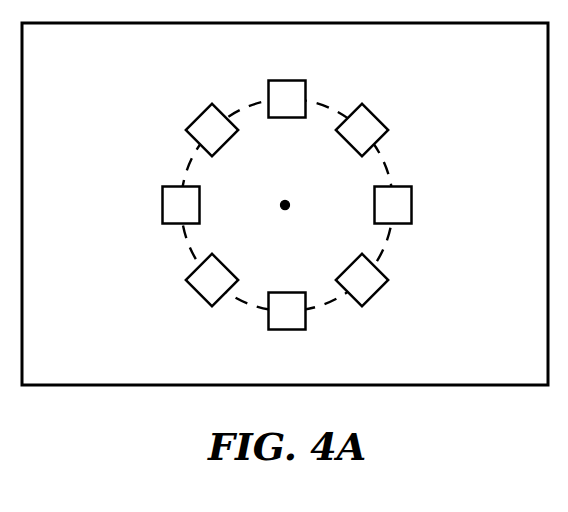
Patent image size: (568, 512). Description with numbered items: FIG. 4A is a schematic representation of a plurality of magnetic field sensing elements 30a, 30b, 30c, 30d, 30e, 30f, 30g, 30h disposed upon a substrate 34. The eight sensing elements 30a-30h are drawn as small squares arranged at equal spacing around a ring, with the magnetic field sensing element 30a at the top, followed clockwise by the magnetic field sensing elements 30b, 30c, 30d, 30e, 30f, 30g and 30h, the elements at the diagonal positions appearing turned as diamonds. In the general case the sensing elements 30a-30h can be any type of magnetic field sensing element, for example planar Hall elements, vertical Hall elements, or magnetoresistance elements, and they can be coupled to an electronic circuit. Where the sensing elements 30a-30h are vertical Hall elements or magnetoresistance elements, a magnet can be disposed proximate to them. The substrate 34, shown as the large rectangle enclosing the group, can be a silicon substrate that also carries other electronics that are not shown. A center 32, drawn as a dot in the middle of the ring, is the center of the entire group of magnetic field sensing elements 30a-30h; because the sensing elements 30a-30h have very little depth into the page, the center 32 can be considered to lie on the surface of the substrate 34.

The magnetic field sensing element 30a is at (299, 81).
The magnetic field sensing element 30b is at (375, 118).
The magnetic field sensing element 30c is at (412, 187).
The magnetic field sensing element 30d is at (366, 300).
The magnetic field sensing element 30e is at (294, 330).
The magnetic field sensing element 30f is at (196, 291).
The magnetic field sensing element 30g is at (163, 187).
The magnetic field sensing element 30h is at (200, 116).
The center 32 is at (289, 200).
The substrate 34 is at (526, 362).